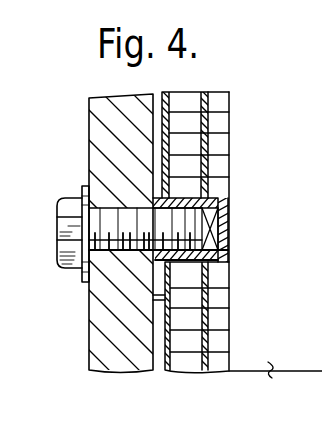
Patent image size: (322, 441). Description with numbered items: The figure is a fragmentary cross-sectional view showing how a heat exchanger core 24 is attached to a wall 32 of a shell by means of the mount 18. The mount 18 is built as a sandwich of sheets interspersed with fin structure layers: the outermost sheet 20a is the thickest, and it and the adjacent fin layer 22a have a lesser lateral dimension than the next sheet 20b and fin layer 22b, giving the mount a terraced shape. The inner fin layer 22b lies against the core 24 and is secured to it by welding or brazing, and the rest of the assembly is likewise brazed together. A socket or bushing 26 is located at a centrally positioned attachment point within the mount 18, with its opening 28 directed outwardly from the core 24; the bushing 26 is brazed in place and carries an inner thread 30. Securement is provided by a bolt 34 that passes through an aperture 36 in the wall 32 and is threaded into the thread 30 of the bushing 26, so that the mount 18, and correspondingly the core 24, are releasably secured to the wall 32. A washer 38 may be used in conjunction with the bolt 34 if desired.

The mount 18 is at (199, 378).
The outermost sheet 20a is at (153, 352).
The adjacent sheet 20b is at (204, 342).
The fin layer 22a is at (188, 103).
The inner fin layer 22b is at (223, 148).
The heat exchanger core 24 is at (275, 383).
The bushing 26 is at (222, 204).
The opening 28 is at (212, 222).
The inner thread 30 is at (225, 248).
The wall 32 is at (102, 343).
The bolt 34 is at (113, 228).
The aperture 36 is at (90, 290).
The washer 38 is at (82, 186).